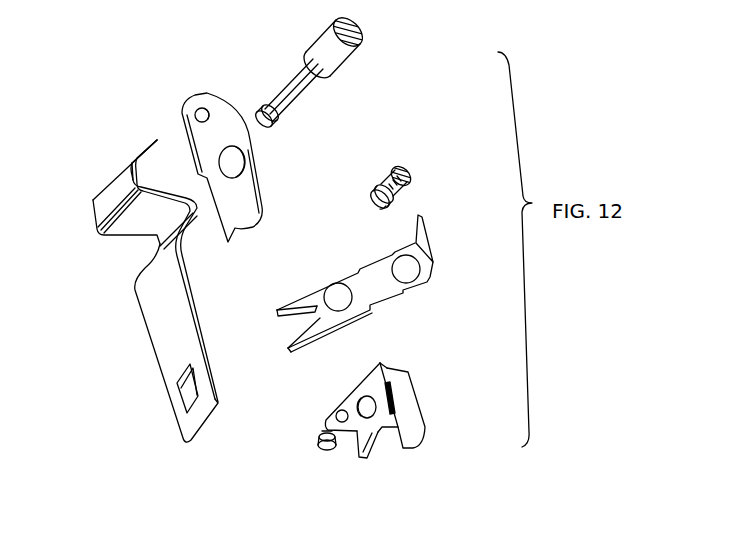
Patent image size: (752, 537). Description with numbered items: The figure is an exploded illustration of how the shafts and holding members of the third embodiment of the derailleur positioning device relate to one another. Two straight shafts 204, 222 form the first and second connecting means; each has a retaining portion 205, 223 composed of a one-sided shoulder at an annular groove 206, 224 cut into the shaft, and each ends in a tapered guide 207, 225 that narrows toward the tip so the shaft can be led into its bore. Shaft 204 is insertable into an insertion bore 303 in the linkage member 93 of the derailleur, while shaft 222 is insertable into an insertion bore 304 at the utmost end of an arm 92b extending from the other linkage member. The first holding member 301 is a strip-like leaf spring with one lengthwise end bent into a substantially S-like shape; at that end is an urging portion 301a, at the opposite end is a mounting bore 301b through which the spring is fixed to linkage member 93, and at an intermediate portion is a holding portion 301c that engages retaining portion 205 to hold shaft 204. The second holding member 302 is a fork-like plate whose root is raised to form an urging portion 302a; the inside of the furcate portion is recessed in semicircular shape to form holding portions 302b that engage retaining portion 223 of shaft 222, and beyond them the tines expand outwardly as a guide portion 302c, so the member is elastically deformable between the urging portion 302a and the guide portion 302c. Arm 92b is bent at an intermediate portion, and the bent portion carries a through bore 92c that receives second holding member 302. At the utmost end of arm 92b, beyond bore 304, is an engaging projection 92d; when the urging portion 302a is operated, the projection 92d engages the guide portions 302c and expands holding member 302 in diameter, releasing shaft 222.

The first holding member 301 is at (148, 356).
The urging portion 301a is at (112, 187).
The mounting bore 301b is at (177, 400).
The holding portion 301c is at (190, 200).
The linkage member 93 is at (252, 217).
The insertion bore 303 is at (248, 160).
The straight shaft 204 is at (320, 42).
The retaining portion 205 is at (293, 108).
The annular groove 206 is at (310, 92).
The tapered guide 207 is at (260, 116).
The straight shaft 222 is at (392, 162).
The retaining portion 223 is at (394, 199).
The annular groove 224 is at (388, 177).
The tapered guide 225 is at (373, 200).
The second holding member 302 is at (427, 291).
The urging portion 302a is at (434, 243).
The holding portions 302b is at (328, 297).
The guide portion 302c is at (300, 322).
The arm 92b is at (411, 373).
The through bore 92c is at (395, 400).
The engaging projection 92d is at (325, 455).
The insertion bore 304 is at (386, 431).